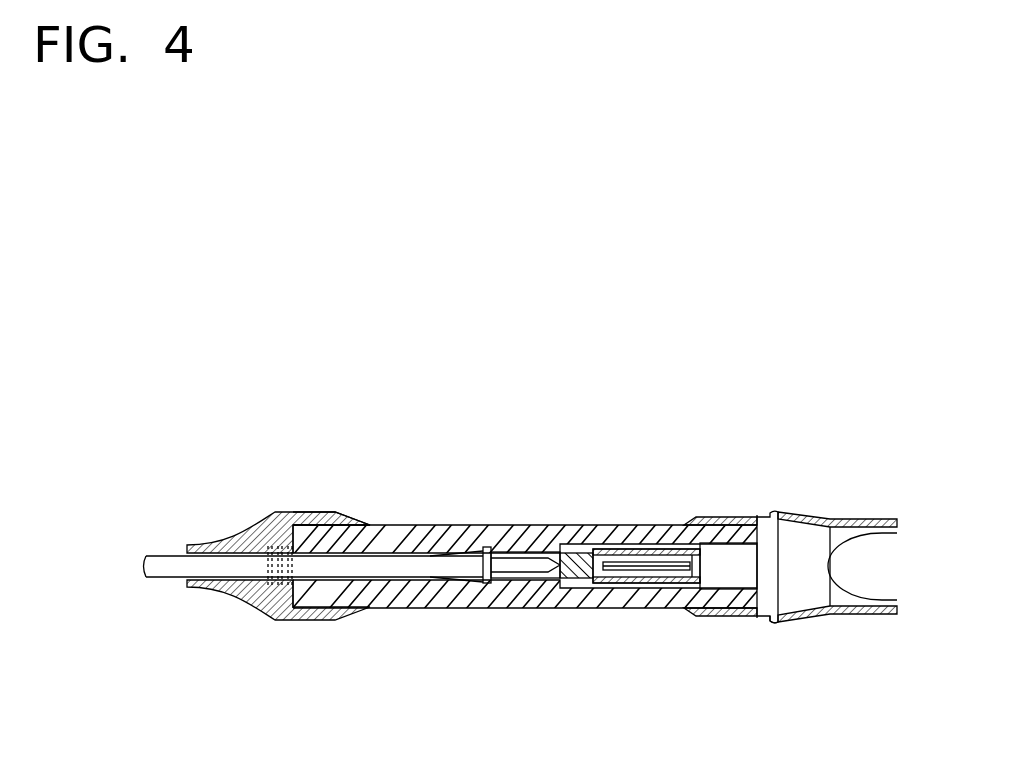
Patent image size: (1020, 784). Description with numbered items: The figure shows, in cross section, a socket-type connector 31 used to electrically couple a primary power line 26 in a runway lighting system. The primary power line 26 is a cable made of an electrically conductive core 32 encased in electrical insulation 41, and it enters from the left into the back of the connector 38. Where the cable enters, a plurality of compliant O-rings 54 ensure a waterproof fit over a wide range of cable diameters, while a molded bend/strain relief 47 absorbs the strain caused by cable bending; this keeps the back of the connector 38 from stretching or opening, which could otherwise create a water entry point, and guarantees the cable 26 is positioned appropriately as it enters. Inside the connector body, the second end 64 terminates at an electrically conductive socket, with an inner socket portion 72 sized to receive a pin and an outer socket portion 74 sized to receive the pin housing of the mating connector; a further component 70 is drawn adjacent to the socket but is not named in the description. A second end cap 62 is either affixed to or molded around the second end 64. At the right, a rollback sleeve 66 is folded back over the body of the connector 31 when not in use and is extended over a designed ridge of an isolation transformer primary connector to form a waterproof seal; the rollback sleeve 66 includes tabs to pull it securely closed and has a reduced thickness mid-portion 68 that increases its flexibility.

The primary power line 26 is at (173, 556).
The socket-type connector 31 is at (534, 450).
The electrically conductive core 32 is at (484, 547).
The connector 38 is at (317, 599).
The electrical insulation 41 is at (487, 588).
The molded bend/strain relief 47 is at (323, 506).
The compliant O-rings 54 is at (270, 539).
The second end cap 62 is at (717, 513).
The second end 64 is at (695, 607).
The rollback sleeve 66 is at (865, 516).
The reduced thickness mid-portion 68 is at (784, 627).
The contact sleeve 70 is at (617, 548).
The inner socket portion 72 is at (617, 587).
The outer socket portion 74 is at (745, 561).